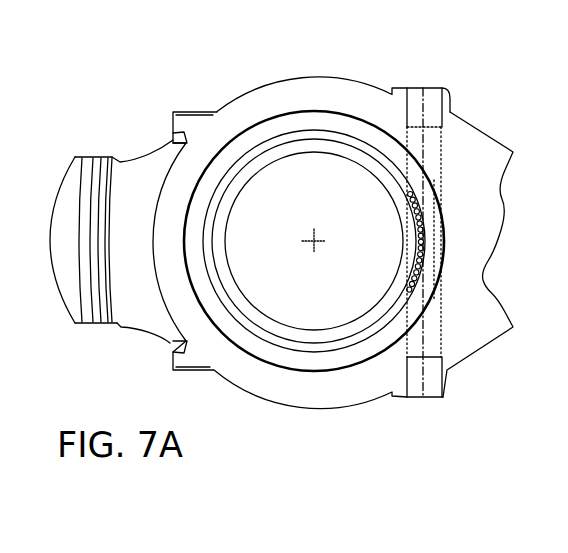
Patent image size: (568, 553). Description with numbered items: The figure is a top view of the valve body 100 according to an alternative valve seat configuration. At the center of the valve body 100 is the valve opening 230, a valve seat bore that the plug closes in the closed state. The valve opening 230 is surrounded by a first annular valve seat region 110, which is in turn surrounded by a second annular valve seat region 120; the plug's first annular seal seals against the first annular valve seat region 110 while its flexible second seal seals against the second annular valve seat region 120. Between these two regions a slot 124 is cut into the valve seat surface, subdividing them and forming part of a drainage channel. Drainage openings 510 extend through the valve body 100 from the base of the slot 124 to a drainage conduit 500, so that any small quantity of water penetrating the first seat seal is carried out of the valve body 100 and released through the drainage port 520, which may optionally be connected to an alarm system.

The valve body 100 is at (237, 103).
The first annular valve seat region 110 is at (346, 330).
The second annular valve seat region 120 is at (283, 358).
The slot 124 is at (313, 353).
The valve opening 230 is at (326, 305).
The drainage conduit 500 is at (427, 332).
The drainage openings 510 is at (423, 227).
The drainage port 520 is at (413, 398).